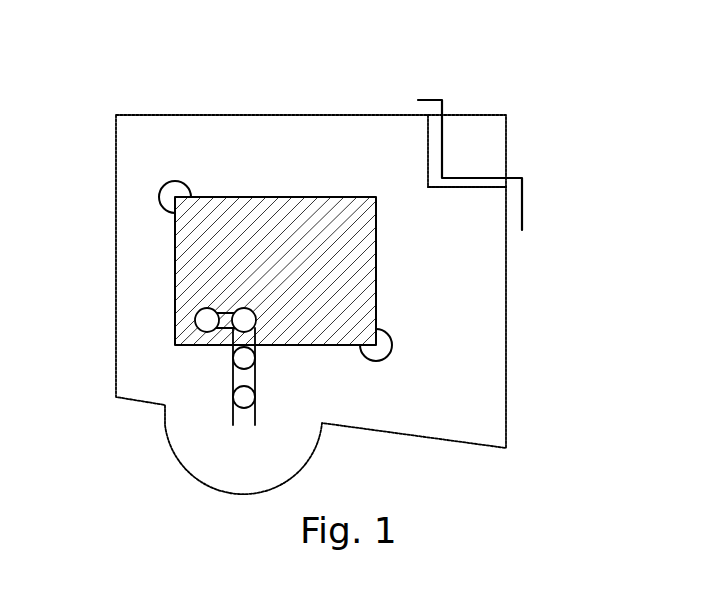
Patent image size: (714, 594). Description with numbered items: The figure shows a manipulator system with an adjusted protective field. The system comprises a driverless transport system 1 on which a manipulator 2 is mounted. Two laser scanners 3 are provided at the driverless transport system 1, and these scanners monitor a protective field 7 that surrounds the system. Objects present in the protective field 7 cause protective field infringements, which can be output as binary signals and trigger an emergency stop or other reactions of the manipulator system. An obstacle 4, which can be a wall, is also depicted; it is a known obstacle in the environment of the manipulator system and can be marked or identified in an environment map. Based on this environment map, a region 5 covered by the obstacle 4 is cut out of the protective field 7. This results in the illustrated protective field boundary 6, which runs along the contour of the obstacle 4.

The driverless transport system 1 is at (282, 210).
The manipulator 2 is at (235, 372).
The laser scanners 3 is at (177, 198).
The obstacle 4 is at (523, 200).
The region covered by the obstacle 5 is at (485, 132).
The protective field boundary 6 is at (478, 188).
The protective field 7 is at (115, 330).